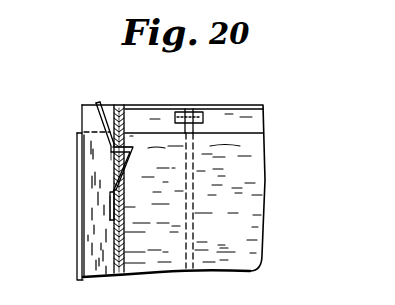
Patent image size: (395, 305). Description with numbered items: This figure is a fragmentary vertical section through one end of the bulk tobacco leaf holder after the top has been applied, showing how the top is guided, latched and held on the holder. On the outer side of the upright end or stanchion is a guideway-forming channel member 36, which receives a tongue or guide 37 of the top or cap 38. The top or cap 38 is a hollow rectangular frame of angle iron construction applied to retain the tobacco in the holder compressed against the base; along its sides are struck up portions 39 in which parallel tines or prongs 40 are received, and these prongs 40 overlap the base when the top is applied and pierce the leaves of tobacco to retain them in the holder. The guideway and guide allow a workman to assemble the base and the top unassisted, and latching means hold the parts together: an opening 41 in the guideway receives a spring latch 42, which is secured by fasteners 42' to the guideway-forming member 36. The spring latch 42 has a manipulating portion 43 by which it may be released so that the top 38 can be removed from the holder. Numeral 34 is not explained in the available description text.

The hatched sealing strip 34 is at (114, 238).
The channel member 36 is at (78, 143).
The tongue or guide 37 is at (89, 201).
The top or cap 38 is at (260, 116).
The struck up portion 39 is at (200, 108).
The tine or prong 40 is at (195, 233).
The opening 41 is at (113, 164).
The spring latch 42 is at (138, 131).
The fastener 42' is at (65, 216).
The manipulating portion 43 is at (97, 101).